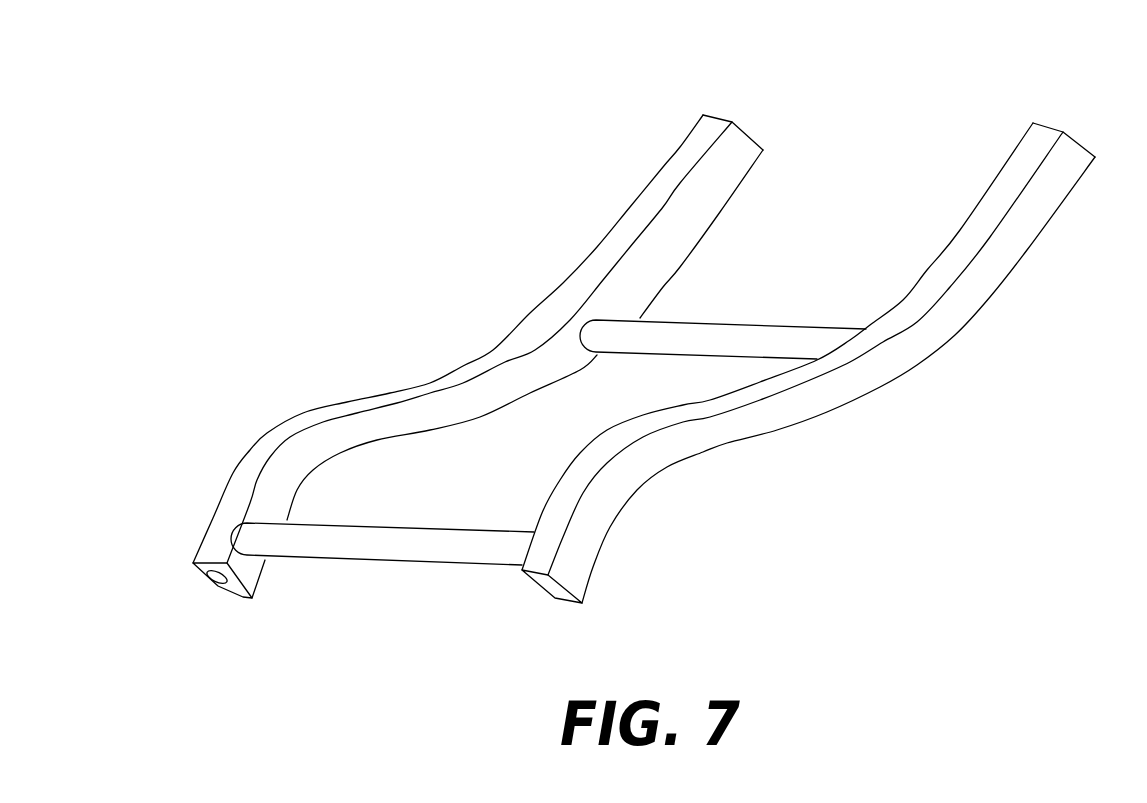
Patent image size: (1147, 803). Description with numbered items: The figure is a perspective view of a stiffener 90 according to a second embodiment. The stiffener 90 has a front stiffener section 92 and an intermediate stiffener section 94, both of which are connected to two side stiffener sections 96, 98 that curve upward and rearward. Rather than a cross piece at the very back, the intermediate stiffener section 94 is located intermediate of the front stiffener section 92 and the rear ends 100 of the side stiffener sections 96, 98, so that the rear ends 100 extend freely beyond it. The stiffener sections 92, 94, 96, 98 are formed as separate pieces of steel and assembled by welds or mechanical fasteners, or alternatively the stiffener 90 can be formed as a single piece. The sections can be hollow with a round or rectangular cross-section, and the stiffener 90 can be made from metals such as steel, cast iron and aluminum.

The stiffener 90 is at (538, 166).
The front stiffener section 92 is at (377, 562).
The intermediate stiffener section 94 is at (740, 322).
The side stiffener section 96 is at (711, 228).
The side stiffener section 98 is at (993, 294).
The rear ends 100 is at (740, 128).